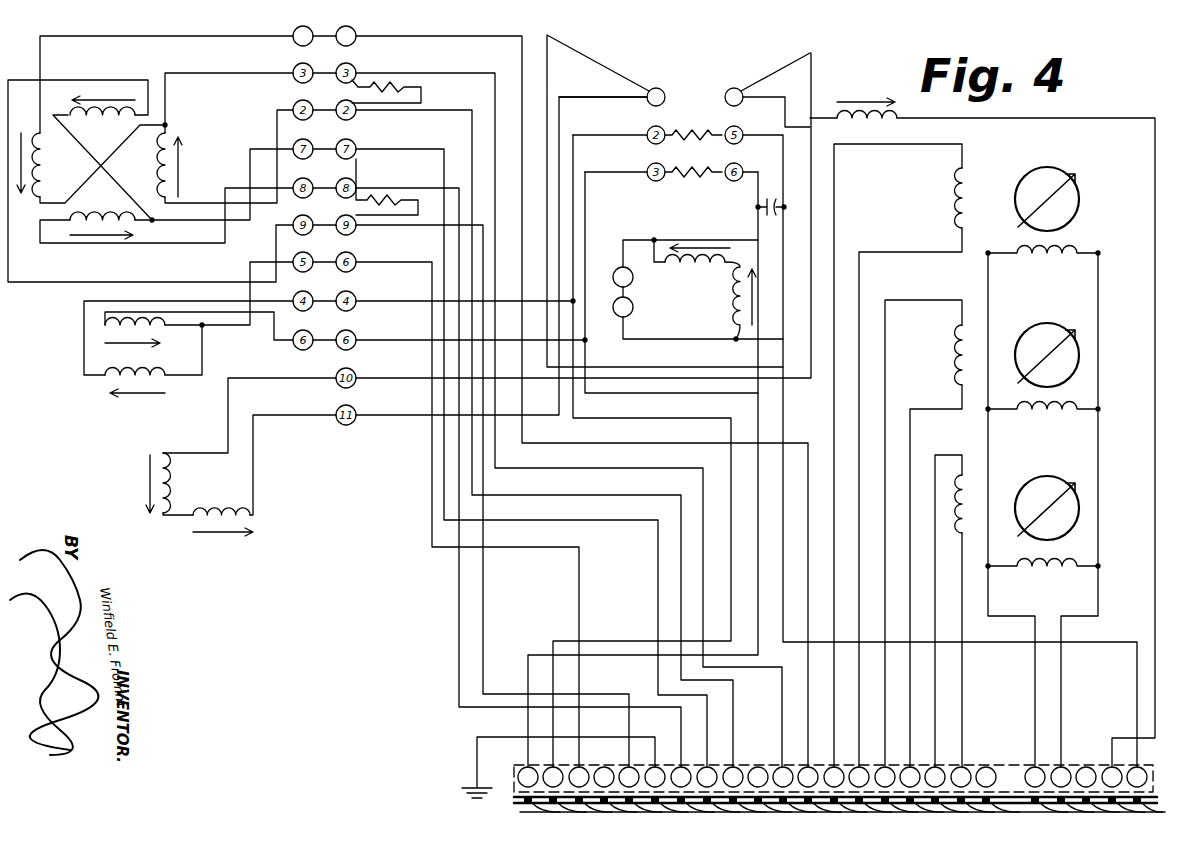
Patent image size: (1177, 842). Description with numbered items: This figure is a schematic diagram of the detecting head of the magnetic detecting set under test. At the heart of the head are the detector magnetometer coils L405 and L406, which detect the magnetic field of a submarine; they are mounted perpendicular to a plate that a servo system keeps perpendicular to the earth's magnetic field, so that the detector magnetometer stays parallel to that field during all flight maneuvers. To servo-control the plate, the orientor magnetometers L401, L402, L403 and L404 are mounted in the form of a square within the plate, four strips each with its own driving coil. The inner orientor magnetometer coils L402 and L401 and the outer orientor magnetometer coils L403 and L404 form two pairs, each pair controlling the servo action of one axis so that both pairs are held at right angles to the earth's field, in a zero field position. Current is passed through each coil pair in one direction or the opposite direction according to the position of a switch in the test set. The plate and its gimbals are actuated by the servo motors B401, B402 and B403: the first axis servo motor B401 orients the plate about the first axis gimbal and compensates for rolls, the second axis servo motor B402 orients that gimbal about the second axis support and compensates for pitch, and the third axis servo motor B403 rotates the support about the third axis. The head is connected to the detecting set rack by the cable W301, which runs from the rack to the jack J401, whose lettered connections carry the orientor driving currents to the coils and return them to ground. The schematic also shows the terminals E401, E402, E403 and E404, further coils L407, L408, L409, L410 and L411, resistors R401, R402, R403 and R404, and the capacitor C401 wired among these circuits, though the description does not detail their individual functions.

The terminal 1 left E401 is at (176, 71).
The terminal 1 right E402 is at (560, 388).
The terminal strip E403 is at (692, 201).
The terminal pair E404 is at (638, 301).
The inner orientor magnetometer coil L401 is at (187, 165).
The inner orientor magnetometer coil L402 is at (48, 165).
The outer orientor magnetometer coil L403 is at (102, 99).
The outer orientor magnetometer coil L404 is at (102, 218).
The detector magnetometer coil L405 is at (135, 341).
The detector magnetometer coil L406 is at (135, 391).
The coil L407 is at (180, 483).
The coil L408 is at (223, 531).
The coil L409 is at (867, 101).
The coil L410 is at (728, 300).
The coil L411 is at (697, 267).
The resistor R401 is at (386, 80).
The resistor R402 is at (387, 187).
The resistor R403 is at (693, 128).
The resistor R404 is at (693, 165).
The capacitor C401 is at (747, 207).
The first axis servo motor B401 is at (1043, 200).
The second axis servo motor B402 is at (1043, 355).
The third axis servo motor B403 is at (1043, 512).
The jack J401 is at (514, 797).
The cable W301 is at (1018, 807).